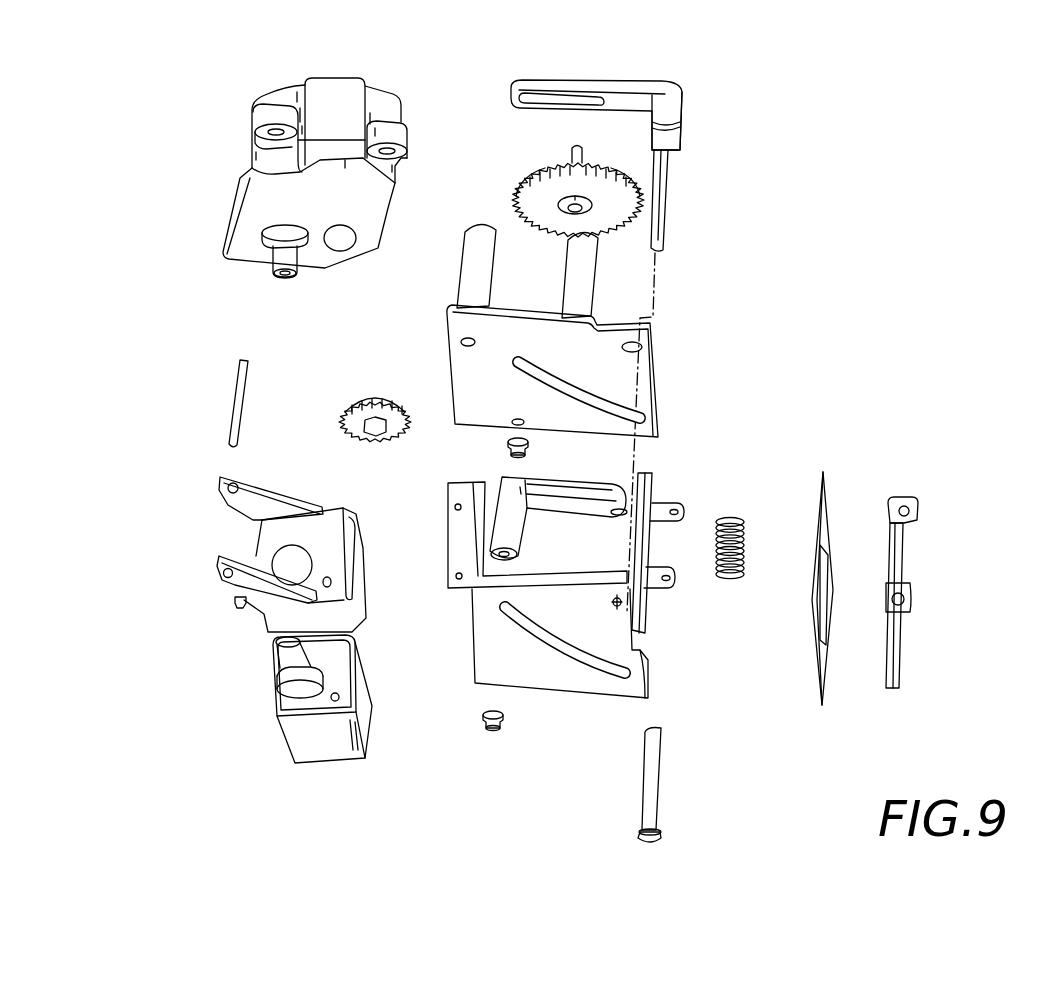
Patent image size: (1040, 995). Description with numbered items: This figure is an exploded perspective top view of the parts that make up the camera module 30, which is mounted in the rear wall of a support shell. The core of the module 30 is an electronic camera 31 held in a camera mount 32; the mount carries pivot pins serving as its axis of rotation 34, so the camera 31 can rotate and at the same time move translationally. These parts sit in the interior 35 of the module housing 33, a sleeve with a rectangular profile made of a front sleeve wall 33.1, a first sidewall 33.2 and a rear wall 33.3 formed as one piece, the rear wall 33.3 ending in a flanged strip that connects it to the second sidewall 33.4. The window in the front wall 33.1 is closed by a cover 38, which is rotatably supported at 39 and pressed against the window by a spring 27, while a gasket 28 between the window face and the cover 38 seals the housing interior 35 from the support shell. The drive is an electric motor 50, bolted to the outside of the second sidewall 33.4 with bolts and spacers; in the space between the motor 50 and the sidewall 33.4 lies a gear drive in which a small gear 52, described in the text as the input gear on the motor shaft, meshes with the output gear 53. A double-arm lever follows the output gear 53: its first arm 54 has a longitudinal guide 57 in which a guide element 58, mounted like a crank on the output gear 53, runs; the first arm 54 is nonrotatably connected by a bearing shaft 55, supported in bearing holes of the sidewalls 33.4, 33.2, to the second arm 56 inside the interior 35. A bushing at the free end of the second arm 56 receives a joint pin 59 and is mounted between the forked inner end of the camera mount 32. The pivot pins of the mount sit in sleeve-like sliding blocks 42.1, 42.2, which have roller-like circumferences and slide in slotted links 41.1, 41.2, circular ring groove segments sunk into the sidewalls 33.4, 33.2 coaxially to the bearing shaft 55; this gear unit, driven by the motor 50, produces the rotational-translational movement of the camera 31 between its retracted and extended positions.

The module 30 is at (787, 175).
The electric motor 50 is at (268, 194).
The joint pin 59 is at (233, 410).
The pinion gear 52 is at (343, 413).
The camera mount 32 is at (220, 588).
The axis of rotation 34 is at (232, 606).
The electronic camera 31 is at (268, 741).
The first arm 54 is at (584, 86).
The longitudinal guide 57 is at (548, 100).
The bearing shaft 55 is at (675, 112).
The output gear 53 is at (525, 197).
The guide element 58 is at (580, 148).
The second sidewall 33.4 is at (662, 378).
The slotted link 41.1 is at (617, 408).
The sliding block 42.1 is at (507, 451).
The module housing 33 is at (653, 612).
The rear wall 33.3 is at (467, 493).
The housing interior 35 is at (612, 563).
The front sleeve wall 33.1 is at (647, 478).
The first sidewall 33.2 is at (620, 637).
The slotted link 41.2 is at (537, 643).
The second arm 56 is at (538, 510).
The sliding block 42.2 is at (478, 720).
The spring 27 is at (736, 505).
The gasket 28 is at (832, 487).
The cover 38 is at (905, 560).
The rotary support of the cover 39 is at (650, 800).